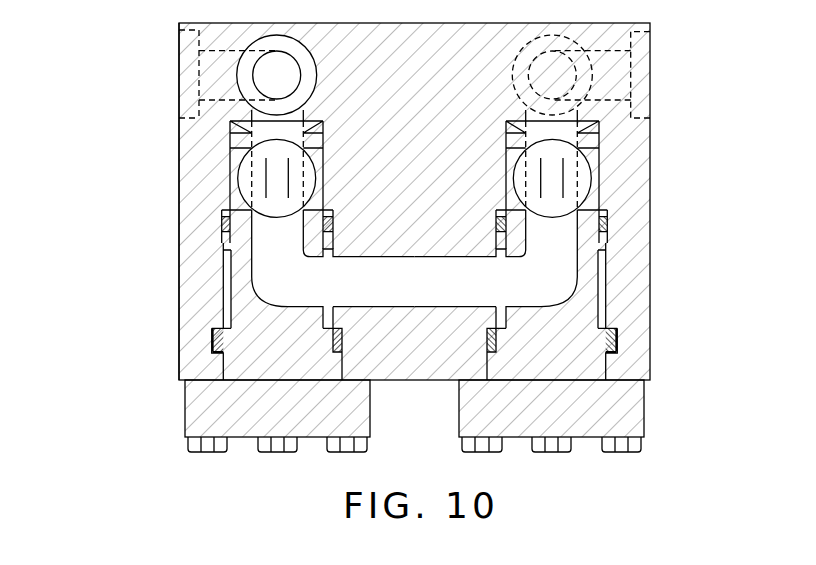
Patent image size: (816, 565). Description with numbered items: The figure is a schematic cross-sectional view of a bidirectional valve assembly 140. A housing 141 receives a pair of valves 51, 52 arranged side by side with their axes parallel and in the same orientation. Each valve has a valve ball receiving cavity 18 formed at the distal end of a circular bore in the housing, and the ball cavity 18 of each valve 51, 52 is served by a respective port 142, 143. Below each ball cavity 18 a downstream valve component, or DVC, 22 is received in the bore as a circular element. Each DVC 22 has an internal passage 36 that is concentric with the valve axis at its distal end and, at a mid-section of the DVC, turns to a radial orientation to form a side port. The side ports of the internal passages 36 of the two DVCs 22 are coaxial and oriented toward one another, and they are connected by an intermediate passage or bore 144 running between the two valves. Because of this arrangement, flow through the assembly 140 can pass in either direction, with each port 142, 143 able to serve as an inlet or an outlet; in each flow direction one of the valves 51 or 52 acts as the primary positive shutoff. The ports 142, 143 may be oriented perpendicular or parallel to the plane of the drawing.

The bidirectional valve assembly 140 is at (146, 245).
The housing 141 is at (195, 148).
The port 142 is at (187, 33).
The port 143 is at (642, 33).
The intermediate passage 144 is at (430, 303).
The valve 51 is at (220, 195).
The valve 52 is at (617, 167).
The valve ball receiving cavity 18 is at (236, 163).
The internal passage 36 is at (240, 250).
The downstream valve component 22 is at (227, 307).